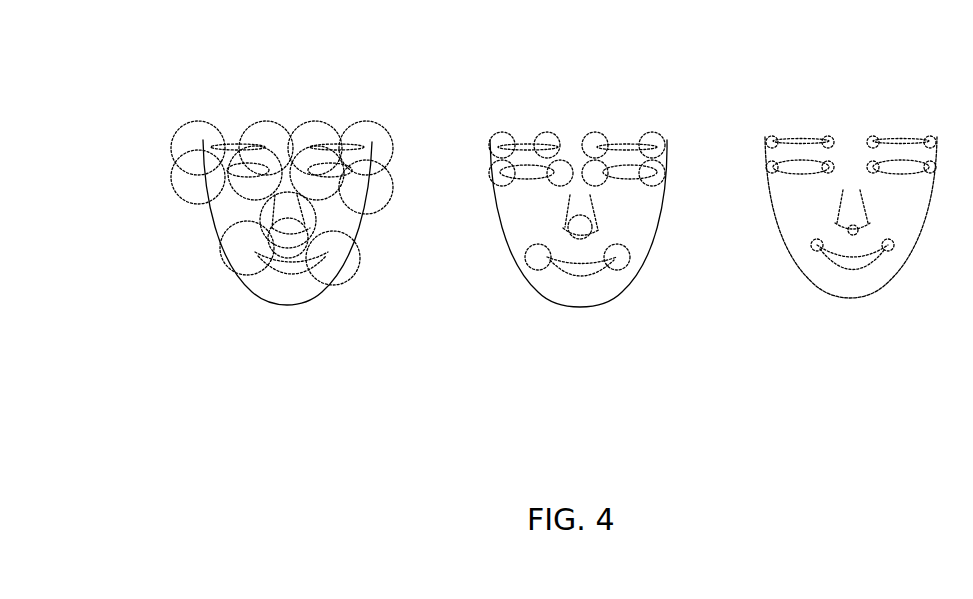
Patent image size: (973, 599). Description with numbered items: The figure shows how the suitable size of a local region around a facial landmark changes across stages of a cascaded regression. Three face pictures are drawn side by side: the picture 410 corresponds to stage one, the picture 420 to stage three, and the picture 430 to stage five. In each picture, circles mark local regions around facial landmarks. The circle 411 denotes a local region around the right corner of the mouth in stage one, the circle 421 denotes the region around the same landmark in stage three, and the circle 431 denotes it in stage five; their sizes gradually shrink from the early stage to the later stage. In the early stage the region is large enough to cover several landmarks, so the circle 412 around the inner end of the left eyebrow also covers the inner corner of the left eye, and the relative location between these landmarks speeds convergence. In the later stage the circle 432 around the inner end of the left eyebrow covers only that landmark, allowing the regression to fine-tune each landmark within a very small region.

The picture 410 is at (285, 73).
The circle 411 is at (360, 267).
The circle 412 is at (273, 122).
The picture 420 is at (568, 75).
The circle 421 is at (628, 263).
The picture 430 is at (840, 75).
The circle 431 is at (892, 247).
The circle 432 is at (830, 142).